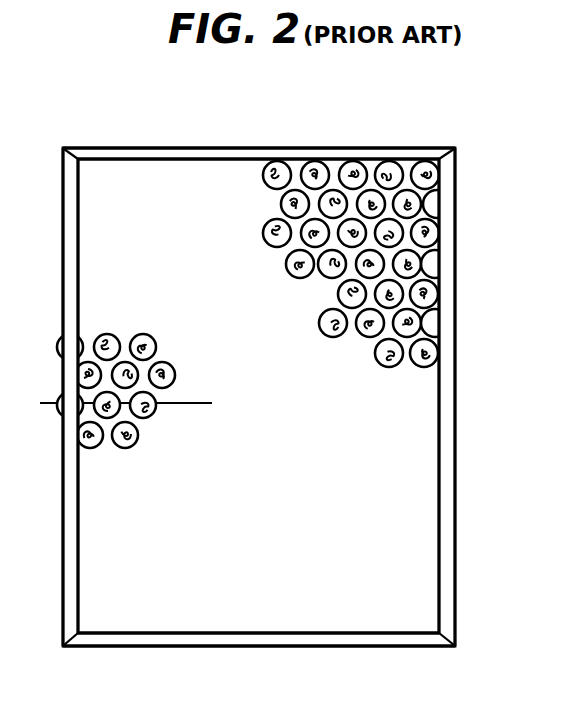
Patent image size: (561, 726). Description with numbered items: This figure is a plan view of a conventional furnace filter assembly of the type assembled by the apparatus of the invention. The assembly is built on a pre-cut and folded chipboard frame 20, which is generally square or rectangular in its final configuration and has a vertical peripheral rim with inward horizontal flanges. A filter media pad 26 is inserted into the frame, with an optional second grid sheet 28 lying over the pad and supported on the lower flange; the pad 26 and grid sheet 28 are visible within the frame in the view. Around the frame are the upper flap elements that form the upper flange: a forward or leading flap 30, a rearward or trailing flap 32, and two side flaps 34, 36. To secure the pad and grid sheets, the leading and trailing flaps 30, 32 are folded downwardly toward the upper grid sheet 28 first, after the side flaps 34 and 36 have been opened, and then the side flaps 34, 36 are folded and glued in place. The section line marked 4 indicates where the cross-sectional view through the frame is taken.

The chipboard frame 20 is at (254, 391).
The filter media pad 26 is at (352, 166).
The second grid sheet 28 is at (360, 226).
The forward or leading flap 30 is at (441, 238).
The rearward or trailing flap 32 is at (68, 224).
The side flap 34 is at (190, 153).
The side flap 36 is at (188, 648).
The section line 4- 4 is at (50, 420).